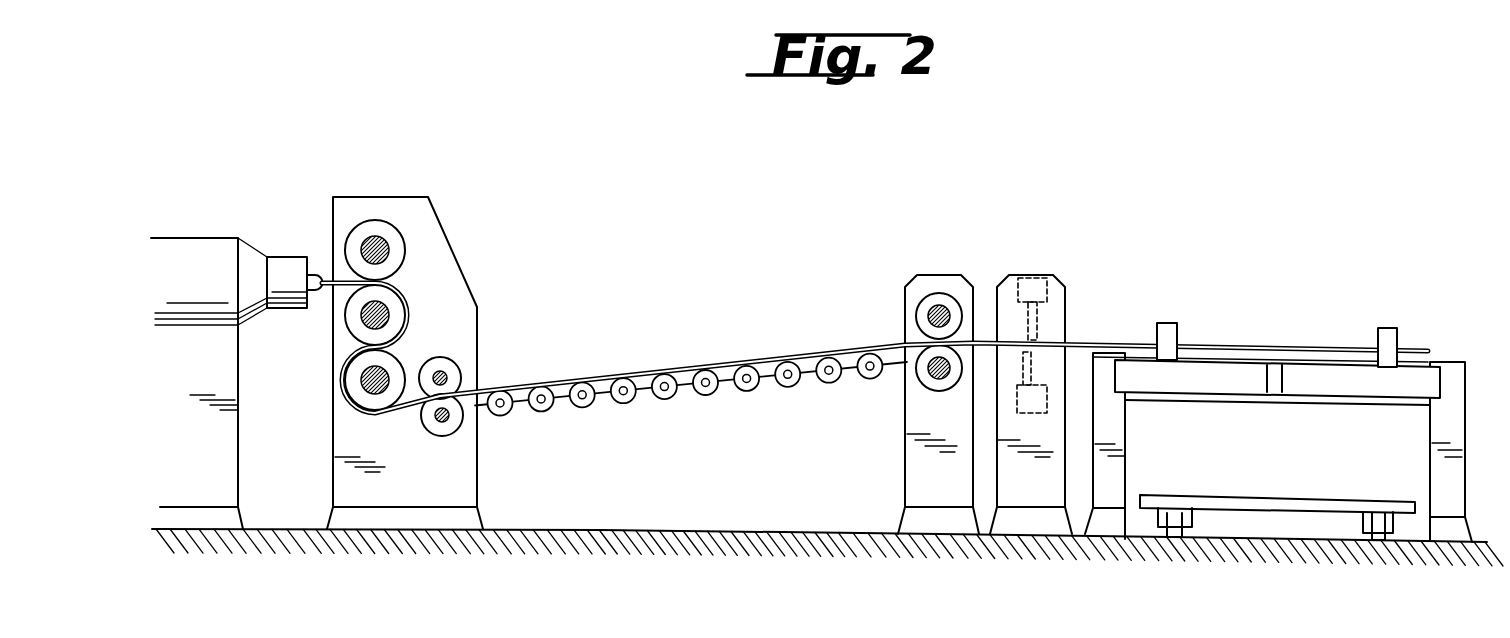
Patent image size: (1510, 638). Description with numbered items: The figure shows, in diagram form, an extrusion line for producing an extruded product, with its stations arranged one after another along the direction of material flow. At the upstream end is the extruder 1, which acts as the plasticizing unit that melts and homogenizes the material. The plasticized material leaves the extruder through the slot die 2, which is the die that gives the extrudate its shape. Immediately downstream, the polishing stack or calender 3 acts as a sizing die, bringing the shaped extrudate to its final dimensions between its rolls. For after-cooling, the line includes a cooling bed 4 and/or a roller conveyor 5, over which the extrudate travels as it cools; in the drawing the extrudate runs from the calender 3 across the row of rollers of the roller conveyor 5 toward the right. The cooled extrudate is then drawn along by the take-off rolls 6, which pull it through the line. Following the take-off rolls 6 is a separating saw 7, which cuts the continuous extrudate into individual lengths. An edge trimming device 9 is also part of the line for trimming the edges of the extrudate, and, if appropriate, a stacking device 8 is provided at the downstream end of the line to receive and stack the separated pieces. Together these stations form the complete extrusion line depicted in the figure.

The extruder 1 is at (211, 236).
The slot die 2 is at (316, 276).
The polishing stack/calender 3 is at (427, 276).
The cooling bed 4 is at (668, 343).
The roller conveyor 5 is at (705, 396).
The take-off rolls 6 is at (909, 314).
The separating saw 7 is at (1044, 334).
The stacking device 8 is at (1259, 327).
The edge trimming device 9 is at (454, 423).